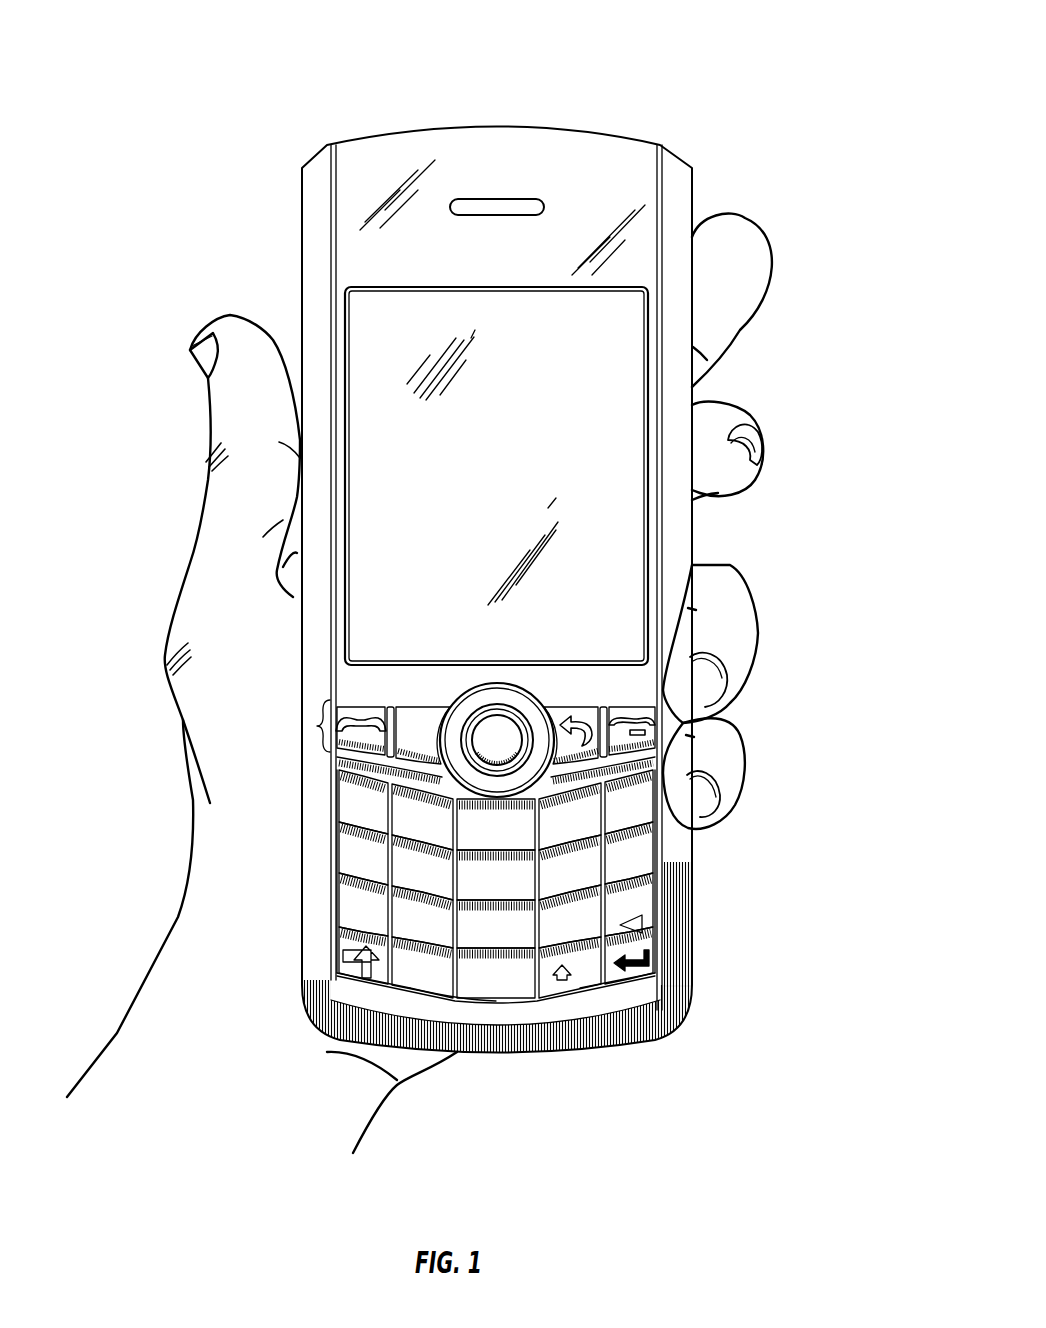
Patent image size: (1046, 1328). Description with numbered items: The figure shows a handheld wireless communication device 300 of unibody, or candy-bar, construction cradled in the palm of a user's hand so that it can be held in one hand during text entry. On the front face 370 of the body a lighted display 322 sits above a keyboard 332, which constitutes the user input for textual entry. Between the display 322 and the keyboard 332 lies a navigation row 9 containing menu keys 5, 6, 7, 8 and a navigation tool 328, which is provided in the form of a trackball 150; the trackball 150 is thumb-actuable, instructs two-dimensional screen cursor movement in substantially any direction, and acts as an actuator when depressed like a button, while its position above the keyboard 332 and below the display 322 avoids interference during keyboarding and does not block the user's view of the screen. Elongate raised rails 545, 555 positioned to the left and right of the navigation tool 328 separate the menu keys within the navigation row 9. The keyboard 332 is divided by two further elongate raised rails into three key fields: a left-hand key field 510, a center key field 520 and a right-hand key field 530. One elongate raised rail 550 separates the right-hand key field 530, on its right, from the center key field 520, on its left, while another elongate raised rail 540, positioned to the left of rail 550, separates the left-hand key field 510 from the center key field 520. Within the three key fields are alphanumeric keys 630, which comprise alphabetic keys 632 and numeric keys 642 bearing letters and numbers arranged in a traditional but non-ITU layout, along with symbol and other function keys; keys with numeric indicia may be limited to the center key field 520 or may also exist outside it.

The handheld wireless communication device 300 is at (380, 107).
The front face 370 is at (588, 160).
The lighted display 322 is at (380, 360).
The navigation tool 328 is at (501, 590).
The trackball 150 is at (500, 737).
The menu key 5 is at (407, 708).
The menu key 6 is at (373, 710).
The menu key 7 is at (585, 708).
The menu key 8 is at (620, 706).
The navigation row 9 is at (471, 627).
The elongate raised rail 545 is at (456, 939).
The elongate raised rail 540 is at (385, 867).
The alphanumeric keys 630 is at (340, 937).
The numeric keys 642 is at (500, 967).
The left-hand key field 510 is at (357, 978).
The center key field 520 is at (460, 1003).
The right-hand key field 530 is at (628, 985).
The elongate raised rail 550 is at (640, 876).
The alphabetic keys 632 is at (640, 845).
The elongate raised rail 555 is at (640, 790).
The keyboard 332 is at (712, 953).